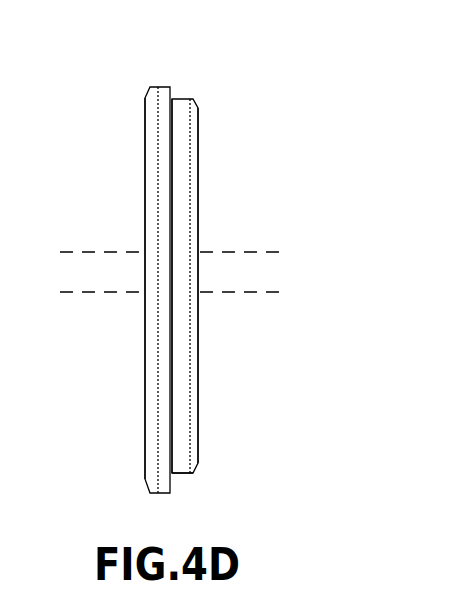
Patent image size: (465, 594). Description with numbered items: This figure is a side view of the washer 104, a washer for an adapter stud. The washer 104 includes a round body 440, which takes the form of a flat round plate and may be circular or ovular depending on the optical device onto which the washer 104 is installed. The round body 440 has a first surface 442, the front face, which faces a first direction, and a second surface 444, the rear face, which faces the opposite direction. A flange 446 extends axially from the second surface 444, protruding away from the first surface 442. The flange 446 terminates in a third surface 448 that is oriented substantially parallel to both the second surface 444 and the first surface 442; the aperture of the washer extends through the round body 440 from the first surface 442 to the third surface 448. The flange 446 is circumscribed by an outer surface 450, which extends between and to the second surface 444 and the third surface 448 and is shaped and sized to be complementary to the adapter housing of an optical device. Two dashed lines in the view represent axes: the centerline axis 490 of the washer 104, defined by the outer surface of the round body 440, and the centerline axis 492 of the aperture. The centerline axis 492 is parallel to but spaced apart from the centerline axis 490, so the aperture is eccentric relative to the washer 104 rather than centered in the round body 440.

The washer 104 is at (98, 77).
The round body 440 is at (165, 86).
The first surface 442 is at (145, 195).
The second surface 444 is at (172, 197).
The flange 446 is at (183, 99).
The third surface 448 is at (198, 152).
The outer surface 450 is at (178, 474).
The centerline axis 490 is at (90, 292).
The centerline axis 492 is at (66, 252).